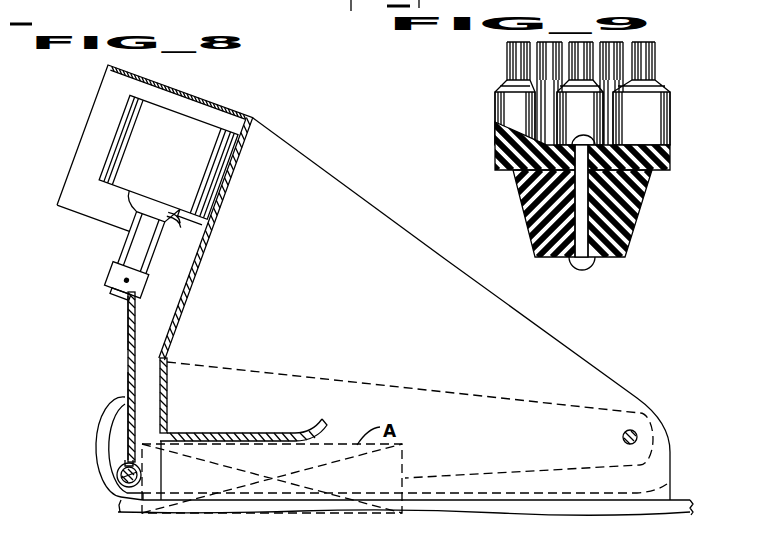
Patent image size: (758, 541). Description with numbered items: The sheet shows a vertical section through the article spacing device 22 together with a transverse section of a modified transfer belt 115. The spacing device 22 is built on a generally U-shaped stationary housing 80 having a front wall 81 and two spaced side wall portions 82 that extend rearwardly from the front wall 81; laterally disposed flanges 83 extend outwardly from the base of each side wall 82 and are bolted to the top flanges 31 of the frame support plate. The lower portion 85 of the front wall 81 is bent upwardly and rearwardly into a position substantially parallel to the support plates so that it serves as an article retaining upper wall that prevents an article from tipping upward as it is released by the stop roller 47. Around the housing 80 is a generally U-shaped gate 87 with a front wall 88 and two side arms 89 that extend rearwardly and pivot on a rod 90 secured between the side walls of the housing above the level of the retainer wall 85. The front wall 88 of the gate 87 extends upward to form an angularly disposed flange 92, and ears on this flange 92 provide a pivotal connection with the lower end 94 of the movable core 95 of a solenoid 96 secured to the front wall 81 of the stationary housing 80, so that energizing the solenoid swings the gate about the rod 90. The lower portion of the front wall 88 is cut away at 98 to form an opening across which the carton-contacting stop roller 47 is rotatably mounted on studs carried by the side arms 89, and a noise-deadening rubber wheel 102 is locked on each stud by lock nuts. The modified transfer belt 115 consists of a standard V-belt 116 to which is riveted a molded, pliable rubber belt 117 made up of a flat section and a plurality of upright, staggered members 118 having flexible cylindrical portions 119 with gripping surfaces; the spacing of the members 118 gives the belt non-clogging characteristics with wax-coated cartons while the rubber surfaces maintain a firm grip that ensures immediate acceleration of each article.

In FIG. 8, the article spacing device 22 is at (126, 360).
In FIG. 8, the top flanges 31 is at (130, 505).
In FIG. 8, the stop roller 47 is at (120, 477).
In FIG. 8, the stationary housing 80 is at (398, 221).
In FIG. 8, the front wall 81 is at (192, 302).
In FIG. 8, the side wall portions 82 is at (395, 318).
In FIG. 8, the flanges 83 is at (650, 491).
In FIG. 8, the lower portion of front wall 85 is at (233, 441).
In FIG. 8, the gate 87 is at (126, 386).
In FIG. 8, the front wall of gate 88 is at (127, 332).
In FIG. 8, the side arms 89 is at (427, 400).
In FIG. 8, the rod 90 is at (640, 438).
In FIG. 8, the flange 92 is at (122, 292).
In FIG. 8, the lower end of movable core 94 is at (117, 272).
In FIG. 8, the movable core 95 is at (143, 229).
In FIG. 8, the solenoid 96 is at (168, 157).
In FIG. 8, the cut-away opening 98 is at (127, 460).
In FIG. 8, the rubber wheel 102 is at (115, 490).
In FIG. 9, the transfer belt 115 is at (488, 163).
In FIG. 9, the V-belt 116 is at (628, 222).
In FIG. 9, the rubber belt 117 is at (670, 149).
In FIG. 9, the upright staggered members 118 is at (565, 112).
In FIG. 9, the cylindrical portions 119 is at (548, 60).